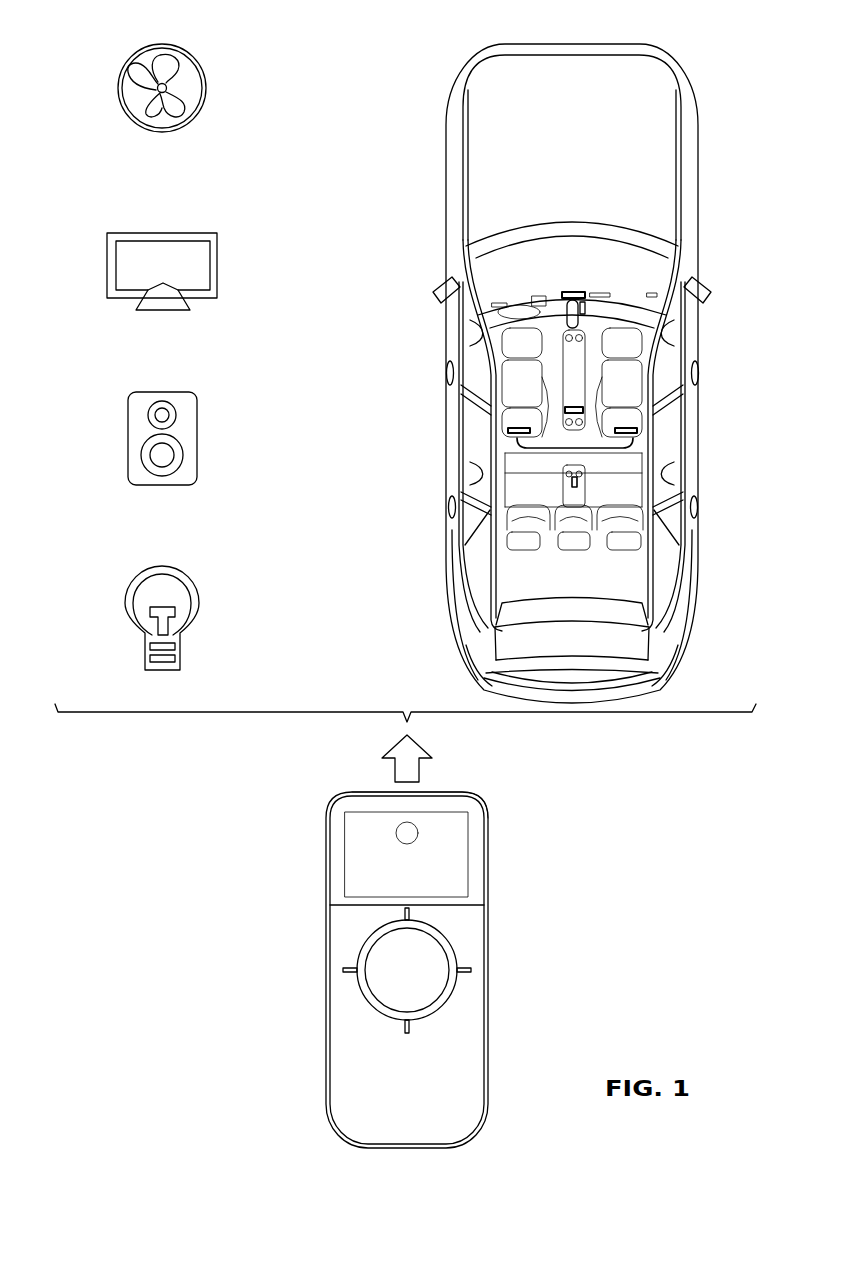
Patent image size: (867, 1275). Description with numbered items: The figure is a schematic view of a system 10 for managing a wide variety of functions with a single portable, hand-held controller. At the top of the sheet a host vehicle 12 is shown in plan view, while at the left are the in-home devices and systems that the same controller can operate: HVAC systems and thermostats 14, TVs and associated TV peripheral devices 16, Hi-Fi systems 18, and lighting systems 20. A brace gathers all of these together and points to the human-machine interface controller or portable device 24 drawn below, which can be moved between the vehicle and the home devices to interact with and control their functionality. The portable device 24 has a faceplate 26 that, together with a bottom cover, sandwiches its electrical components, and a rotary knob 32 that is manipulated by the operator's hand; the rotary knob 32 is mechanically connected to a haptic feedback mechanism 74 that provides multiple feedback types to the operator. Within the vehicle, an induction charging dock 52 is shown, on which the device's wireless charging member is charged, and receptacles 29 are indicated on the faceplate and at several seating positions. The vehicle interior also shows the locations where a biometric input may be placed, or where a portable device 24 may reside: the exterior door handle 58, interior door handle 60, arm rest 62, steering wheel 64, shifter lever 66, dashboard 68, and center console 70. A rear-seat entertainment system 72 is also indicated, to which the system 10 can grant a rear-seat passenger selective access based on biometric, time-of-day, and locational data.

The system 10 is at (178, 806).
The host vehicle 12 is at (704, 58).
The HVAC systems and thermostats 14 is at (193, 50).
The TVs and associated TV peripheral devices 16 is at (197, 226).
The Hi-Fi systems 18 is at (181, 385).
The lighting systems 20 is at (188, 570).
The portable device 24 is at (343, 778).
The faceplate 26 is at (452, 808).
The docking station / receptacle 29 is at (576, 292).
The rotary knob 32 is at (382, 990).
The induction charging dock 52 is at (580, 481).
The exterior door handle 58 is at (699, 372).
The interior door handle 60 is at (485, 314).
The arm rest 62 is at (566, 352).
The steering wheel 64 is at (500, 311).
The shifter lever 66 is at (586, 316).
The dashboard 68 is at (537, 300).
The center console 70 is at (566, 308).
The rear-seat entertainment system 72 is at (573, 450).
The haptic feedback mechanism 74 is at (432, 992).